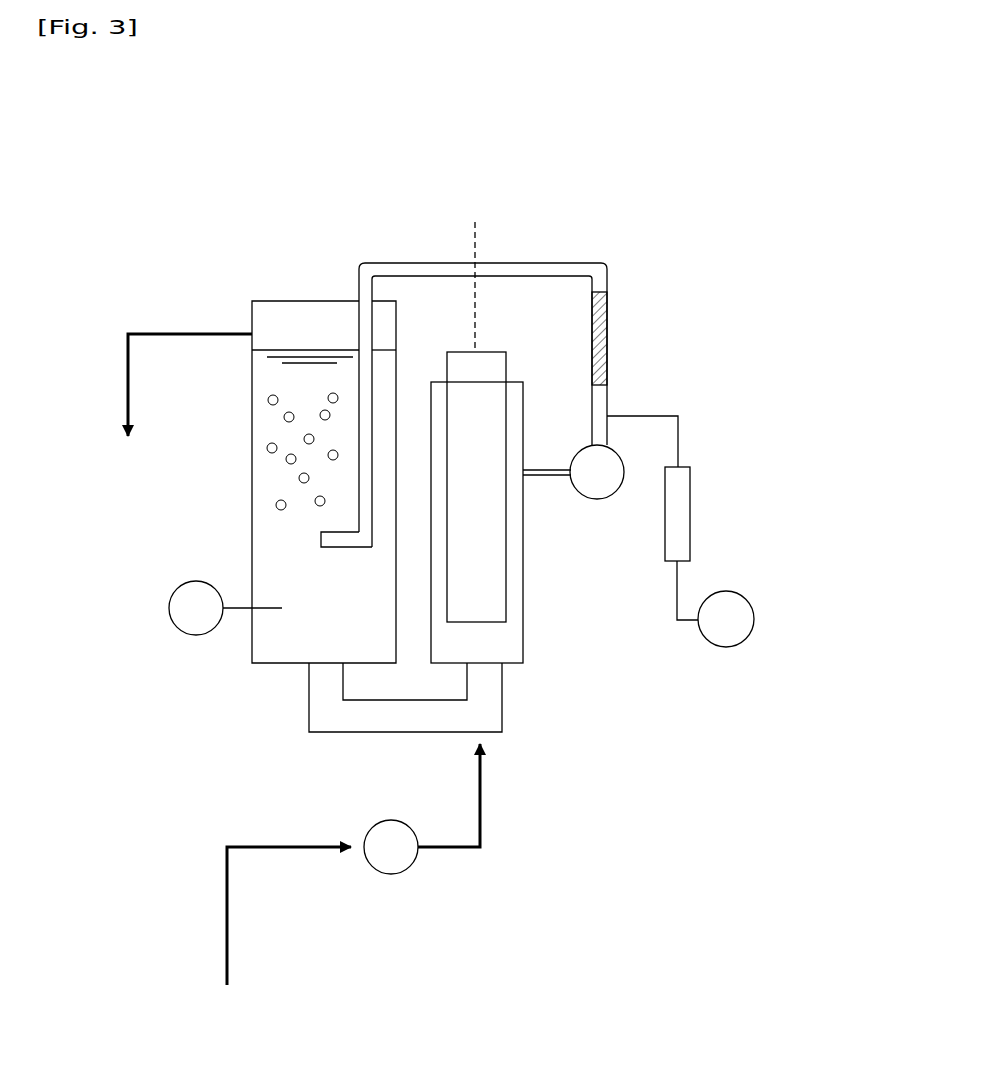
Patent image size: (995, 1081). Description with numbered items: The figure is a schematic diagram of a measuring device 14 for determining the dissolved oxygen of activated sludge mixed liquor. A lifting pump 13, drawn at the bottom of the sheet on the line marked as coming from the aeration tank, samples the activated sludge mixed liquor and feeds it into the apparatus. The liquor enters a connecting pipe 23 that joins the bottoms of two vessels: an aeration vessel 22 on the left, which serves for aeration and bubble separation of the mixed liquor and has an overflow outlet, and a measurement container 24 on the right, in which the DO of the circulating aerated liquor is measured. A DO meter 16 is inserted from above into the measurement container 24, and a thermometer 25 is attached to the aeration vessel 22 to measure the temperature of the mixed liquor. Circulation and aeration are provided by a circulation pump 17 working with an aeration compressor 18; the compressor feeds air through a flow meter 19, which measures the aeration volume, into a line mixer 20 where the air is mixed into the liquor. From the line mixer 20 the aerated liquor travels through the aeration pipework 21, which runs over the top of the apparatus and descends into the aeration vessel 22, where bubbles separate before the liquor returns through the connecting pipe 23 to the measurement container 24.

The lifting pump 13 is at (391, 874).
The measuring device 14 is at (612, 178).
The DO meter 16 is at (505, 368).
The circulation pump 17 is at (600, 502).
The aeration compressor 18 is at (755, 620).
The flow meter 19 is at (690, 515).
The line mixer 20 is at (608, 320).
The aeration pipework 21 is at (383, 262).
The aeration vessel 22 is at (271, 300).
The connecting pipe 23 is at (309, 702).
The measurement container 24 is at (527, 628).
The thermometer 25 is at (165, 610).